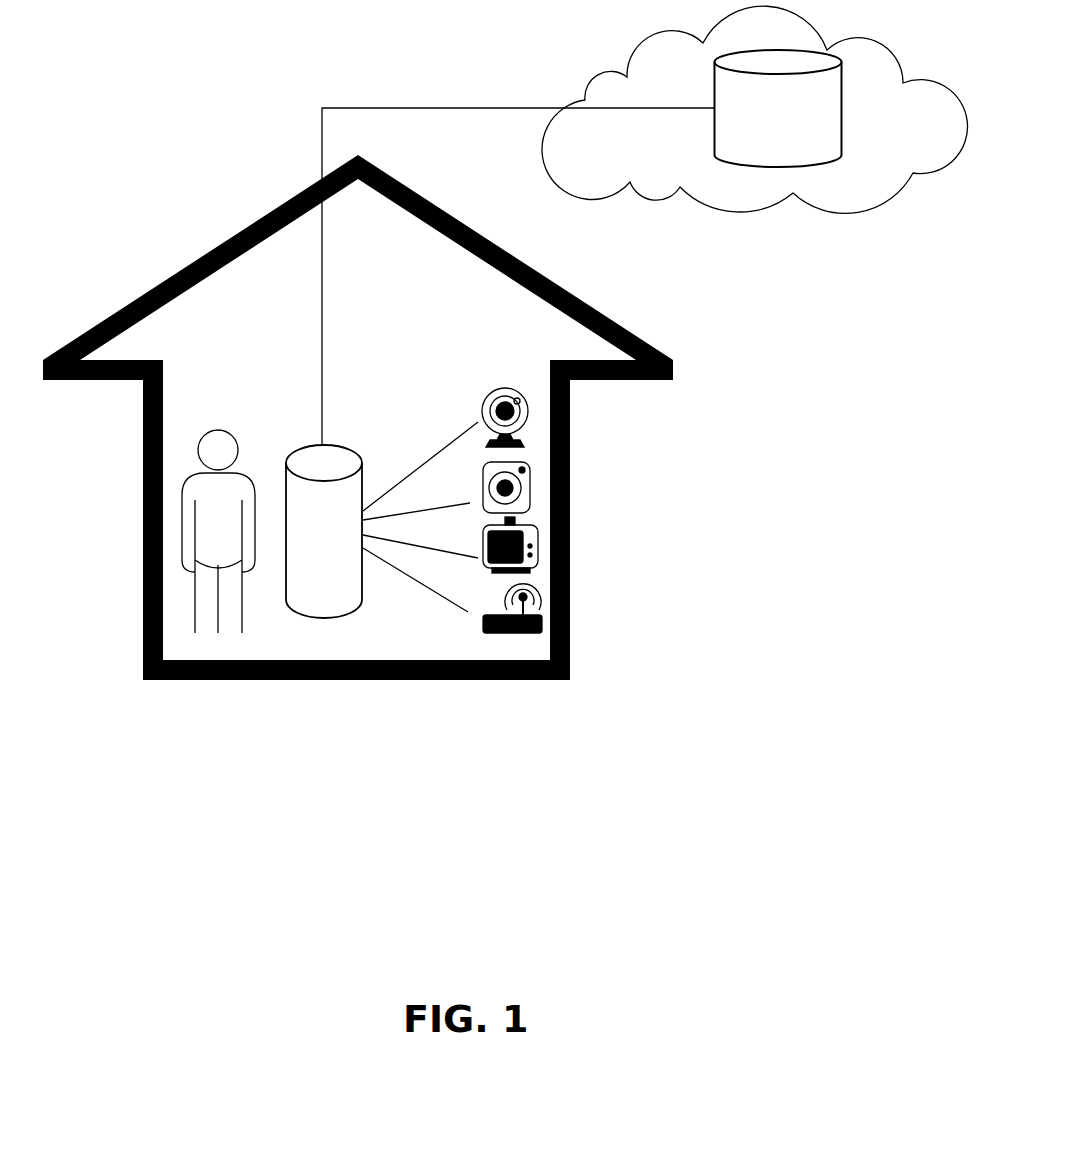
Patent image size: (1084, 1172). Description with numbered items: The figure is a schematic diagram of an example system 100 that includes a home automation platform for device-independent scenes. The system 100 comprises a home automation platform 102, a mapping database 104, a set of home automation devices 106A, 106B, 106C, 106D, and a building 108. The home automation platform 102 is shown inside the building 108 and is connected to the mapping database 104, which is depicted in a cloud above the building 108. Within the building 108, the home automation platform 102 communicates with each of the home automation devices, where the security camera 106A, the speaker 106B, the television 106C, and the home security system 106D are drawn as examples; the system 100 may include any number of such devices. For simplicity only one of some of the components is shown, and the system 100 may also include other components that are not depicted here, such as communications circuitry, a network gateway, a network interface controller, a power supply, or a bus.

The system 100 is at (505, 465).
The home automation platform 102 is at (342, 620).
The mapping database 104 is at (784, 147).
The security camera 106A is at (583, 423).
The speaker 106B is at (583, 486).
The television 106C is at (583, 552).
The home security system 106D is at (583, 607).
The building 108 is at (180, 682).